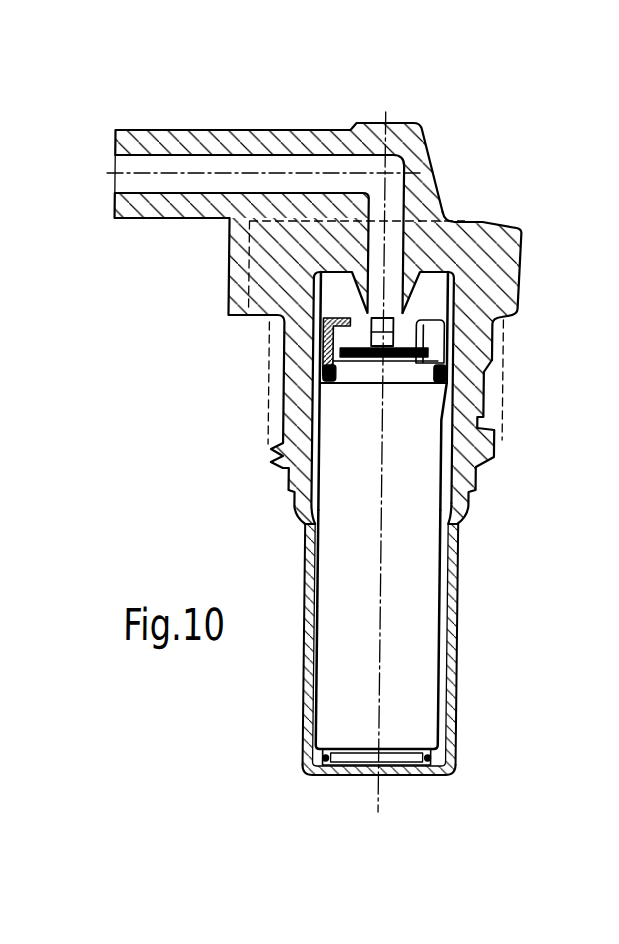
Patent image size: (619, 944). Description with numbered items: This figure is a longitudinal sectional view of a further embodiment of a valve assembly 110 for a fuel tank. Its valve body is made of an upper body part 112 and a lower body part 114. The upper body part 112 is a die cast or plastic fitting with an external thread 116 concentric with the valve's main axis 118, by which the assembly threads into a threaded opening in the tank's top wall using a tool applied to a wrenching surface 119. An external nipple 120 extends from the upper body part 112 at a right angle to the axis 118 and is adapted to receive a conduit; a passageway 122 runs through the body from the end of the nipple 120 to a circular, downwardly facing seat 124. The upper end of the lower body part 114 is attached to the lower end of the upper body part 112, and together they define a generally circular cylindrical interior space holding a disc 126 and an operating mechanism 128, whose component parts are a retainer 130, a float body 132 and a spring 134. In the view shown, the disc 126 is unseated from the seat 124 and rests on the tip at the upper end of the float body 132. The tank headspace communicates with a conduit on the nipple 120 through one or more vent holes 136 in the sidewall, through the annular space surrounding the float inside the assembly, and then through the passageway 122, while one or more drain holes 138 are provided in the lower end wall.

The valve assembly 110 is at (520, 227).
The upper body part 112 is at (496, 263).
The lower body part 114 is at (458, 666).
The external thread 116 is at (500, 391).
The main axis 118 is at (382, 121).
The wrenching surface 119 is at (519, 295).
The nipple 120 is at (172, 129).
The passageway 122 is at (210, 190).
The seat 124 is at (405, 320).
The disc 126 is at (350, 358).
The operating mechanism 128 is at (443, 459).
The retainer 130 is at (440, 371).
The float body 132 is at (414, 608).
The spring 134 is at (312, 771).
The vent holes 136 is at (453, 583).
The drain holes 138 is at (380, 777).